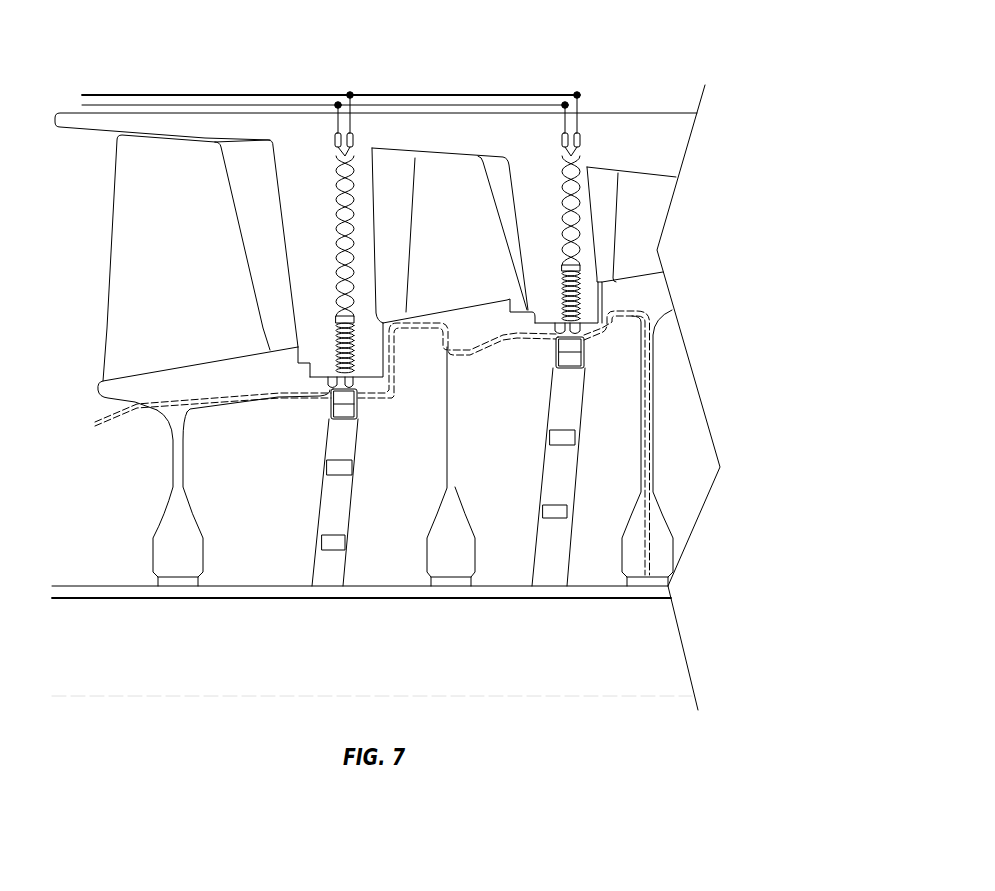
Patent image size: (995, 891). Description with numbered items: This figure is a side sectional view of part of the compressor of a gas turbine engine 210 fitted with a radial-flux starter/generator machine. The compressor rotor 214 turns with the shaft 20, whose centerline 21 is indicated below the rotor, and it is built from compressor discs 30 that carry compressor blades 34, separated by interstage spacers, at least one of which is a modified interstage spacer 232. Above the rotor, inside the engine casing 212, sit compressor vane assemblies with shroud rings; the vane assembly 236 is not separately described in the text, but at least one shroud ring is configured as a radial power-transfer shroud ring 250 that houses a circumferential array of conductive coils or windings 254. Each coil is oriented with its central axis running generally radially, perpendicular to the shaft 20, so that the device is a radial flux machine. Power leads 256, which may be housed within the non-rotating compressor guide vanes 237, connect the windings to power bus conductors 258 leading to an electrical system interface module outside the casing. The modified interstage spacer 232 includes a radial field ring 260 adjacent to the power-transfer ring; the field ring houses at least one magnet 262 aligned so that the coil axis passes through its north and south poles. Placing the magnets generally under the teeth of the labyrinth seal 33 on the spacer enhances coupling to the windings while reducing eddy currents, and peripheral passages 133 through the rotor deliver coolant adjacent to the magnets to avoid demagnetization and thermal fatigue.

The gas turbine engine 210 is at (673, 44).
The power bus conductors 258 is at (120, 86).
The outer casing 212 is at (609, 107).
The casing support 214 is at (690, 361).
The compressor blades 34 is at (195, 273).
The vane airfoil 236 is at (276, 162).
The non-rotating compressor guide vanes 237 is at (328, 224).
The power leads 256 is at (342, 190).
The conductive coils 254 is at (338, 335).
The radial power-transfer shroud ring 250 is at (312, 365).
The modified interstage spacer 232 is at (323, 394).
The peripheral passages 133 is at (190, 409).
The labyrinth seal 33 is at (355, 380).
The magnet 262 is at (358, 411).
The radial field ring 260 is at (586, 360).
The compressor discs 30 is at (200, 555).
The shaft 20 is at (663, 599).
The engine axis 21 is at (177, 697).